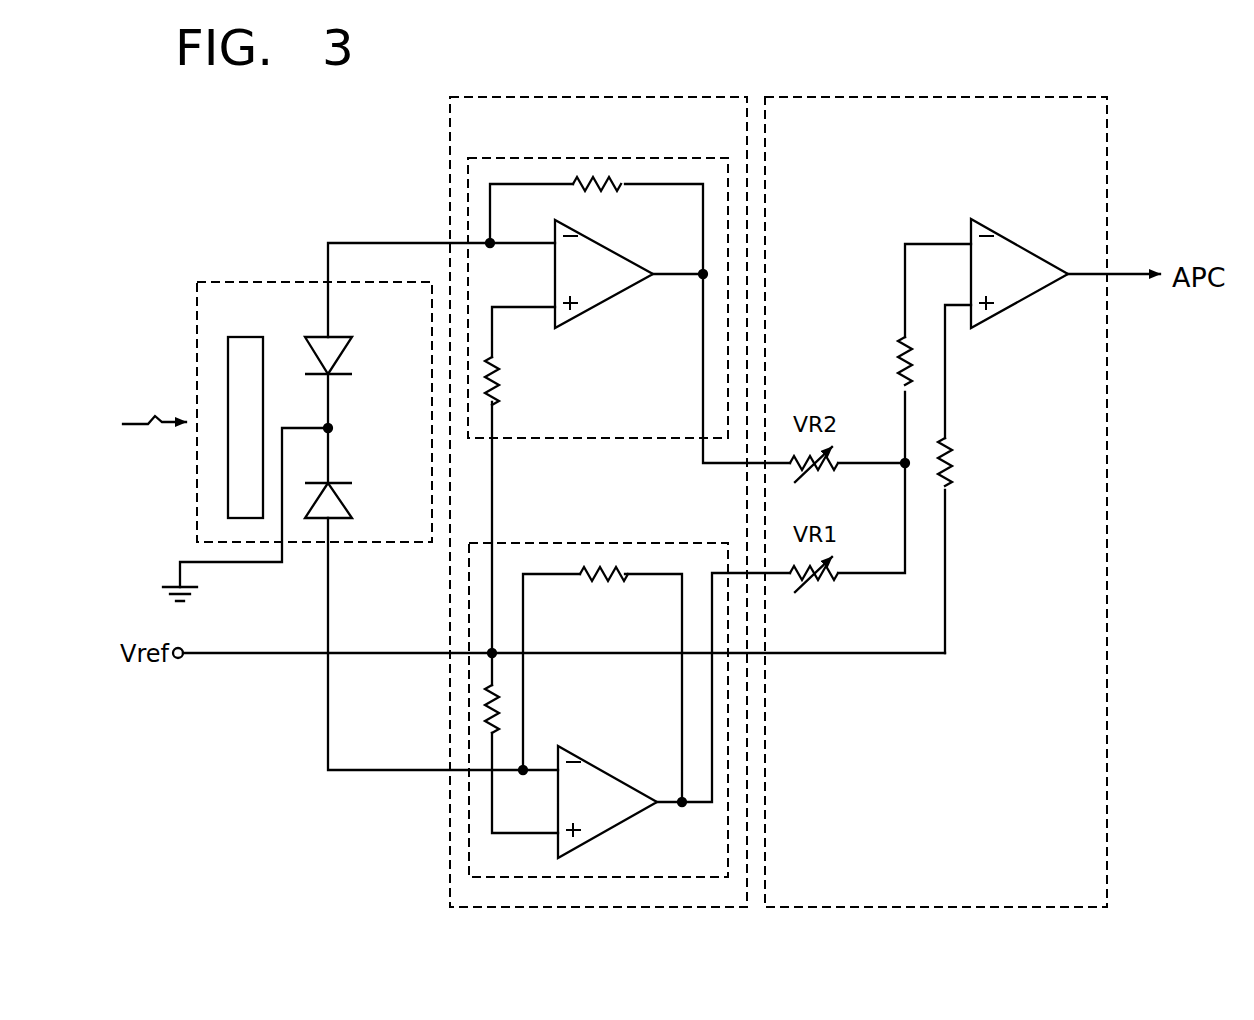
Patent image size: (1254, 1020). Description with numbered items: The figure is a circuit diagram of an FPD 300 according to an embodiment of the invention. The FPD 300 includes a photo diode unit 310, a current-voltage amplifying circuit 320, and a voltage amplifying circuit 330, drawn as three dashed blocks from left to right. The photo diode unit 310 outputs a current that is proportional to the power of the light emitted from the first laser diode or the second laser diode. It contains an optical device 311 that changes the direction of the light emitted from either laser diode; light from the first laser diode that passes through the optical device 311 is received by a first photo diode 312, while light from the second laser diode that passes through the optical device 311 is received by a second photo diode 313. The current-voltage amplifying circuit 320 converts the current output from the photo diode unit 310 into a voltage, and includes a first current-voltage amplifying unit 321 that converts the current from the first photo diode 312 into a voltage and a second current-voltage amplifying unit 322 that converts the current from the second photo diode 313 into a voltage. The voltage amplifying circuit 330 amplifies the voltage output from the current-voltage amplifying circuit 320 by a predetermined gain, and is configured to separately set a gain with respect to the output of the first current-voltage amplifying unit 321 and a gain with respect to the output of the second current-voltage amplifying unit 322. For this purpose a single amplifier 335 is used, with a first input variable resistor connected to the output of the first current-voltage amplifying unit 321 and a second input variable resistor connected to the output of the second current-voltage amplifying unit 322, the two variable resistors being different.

The FPD 300 is at (1120, 73).
The photo diode unit 310 is at (227, 282).
The optical device 311 is at (248, 337).
The first photo diode 312 is at (352, 500).
The second photo diode 313 is at (352, 356).
The current-voltage amplifying circuit 320 is at (597, 97).
The first current-voltage amplifying unit 321 is at (602, 543).
The second current-voltage amplifying unit 322 is at (600, 158).
The voltage amplifying circuit 330 is at (960, 97).
The amplifier 335 is at (1032, 300).